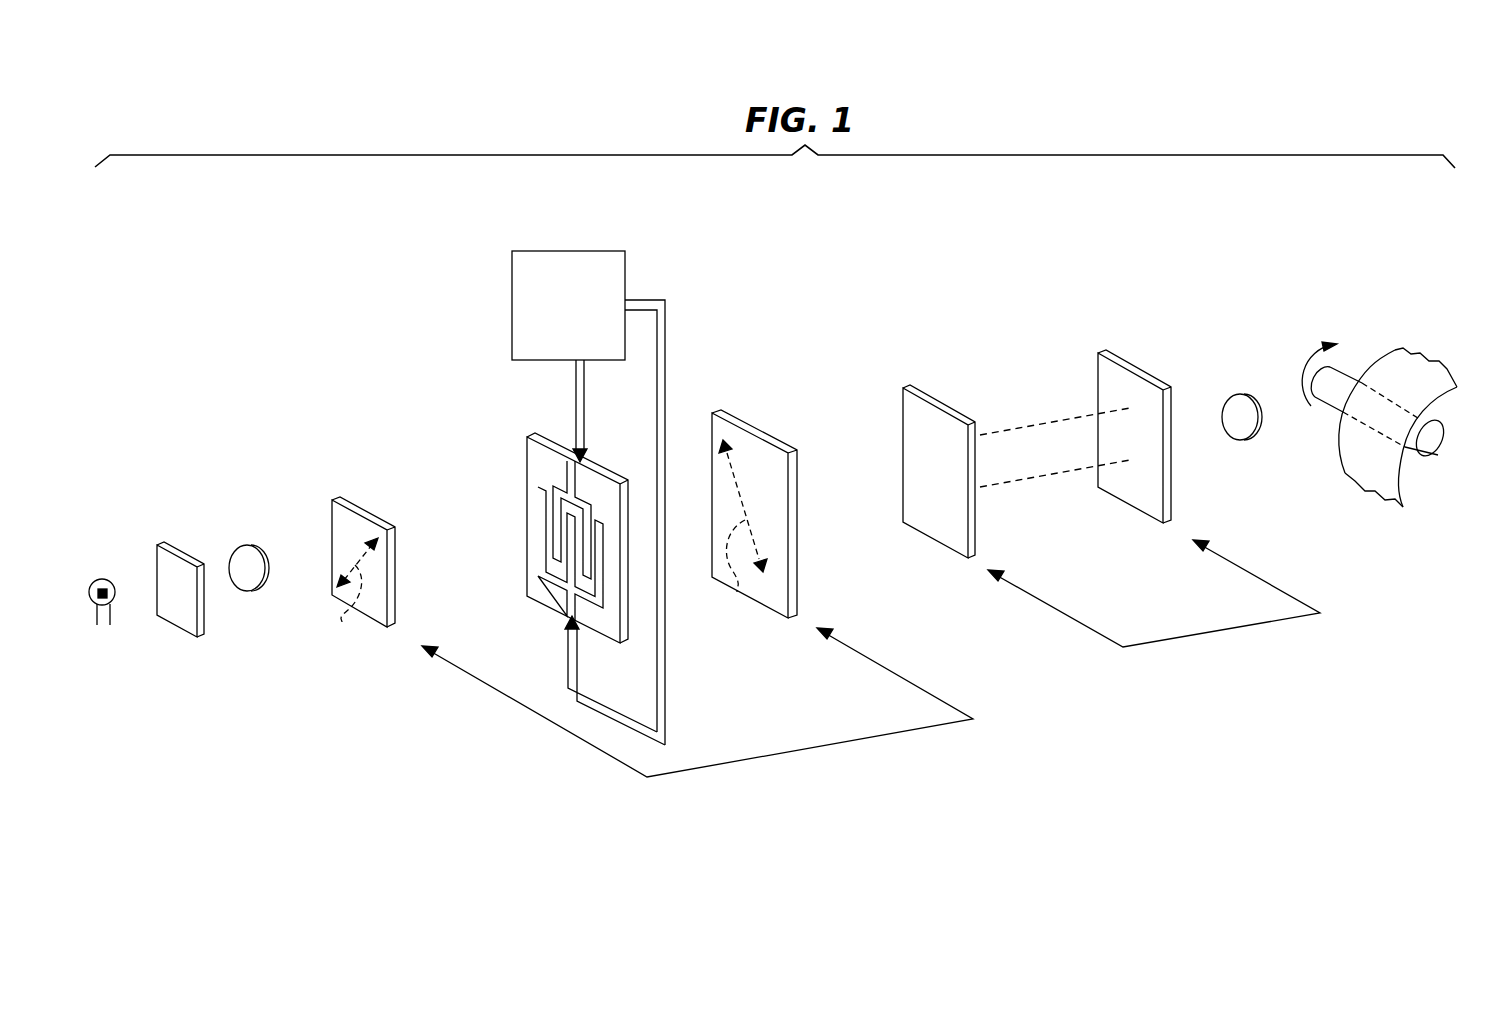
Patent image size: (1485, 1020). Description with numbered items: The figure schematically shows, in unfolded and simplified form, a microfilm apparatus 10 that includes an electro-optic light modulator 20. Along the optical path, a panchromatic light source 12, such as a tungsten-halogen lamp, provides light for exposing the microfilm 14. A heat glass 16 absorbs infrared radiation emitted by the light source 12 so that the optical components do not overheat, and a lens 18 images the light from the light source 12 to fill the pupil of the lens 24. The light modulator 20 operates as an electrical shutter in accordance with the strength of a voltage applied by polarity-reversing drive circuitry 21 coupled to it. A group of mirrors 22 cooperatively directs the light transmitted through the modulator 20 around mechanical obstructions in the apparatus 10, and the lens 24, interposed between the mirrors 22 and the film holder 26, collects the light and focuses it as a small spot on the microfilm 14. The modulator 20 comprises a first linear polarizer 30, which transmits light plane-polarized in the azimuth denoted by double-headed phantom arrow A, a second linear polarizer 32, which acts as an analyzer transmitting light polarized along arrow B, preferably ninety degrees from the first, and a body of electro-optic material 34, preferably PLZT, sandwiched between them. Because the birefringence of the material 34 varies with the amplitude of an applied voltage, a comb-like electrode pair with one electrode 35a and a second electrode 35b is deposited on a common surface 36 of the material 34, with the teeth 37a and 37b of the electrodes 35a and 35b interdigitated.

The microfilm apparatus 10 is at (1083, 218).
The panchromatic light source 12 is at (100, 578).
The microfilm 14 is at (1387, 370).
The heat glass 16 is at (180, 548).
The lens 18 is at (262, 550).
The electro-optic light modulator 20 is at (845, 748).
The polarity-reversing drive circuitry 21 is at (588, 251).
The group of mirrors 22 is at (1240, 628).
The lens 24 is at (1242, 393).
The film holder 26 is at (1430, 453).
The first linear polarizer 30 is at (338, 500).
The second linear polarizer 32 is at (775, 437).
The body of electro-optic material 34 is at (592, 470).
The first electrode 35a is at (540, 543).
The second electrode 35b is at (560, 493).
The common surface 36 is at (532, 468).
The teeth of first electrode 37a is at (602, 573).
The teeth of second electrode 37b is at (588, 517).